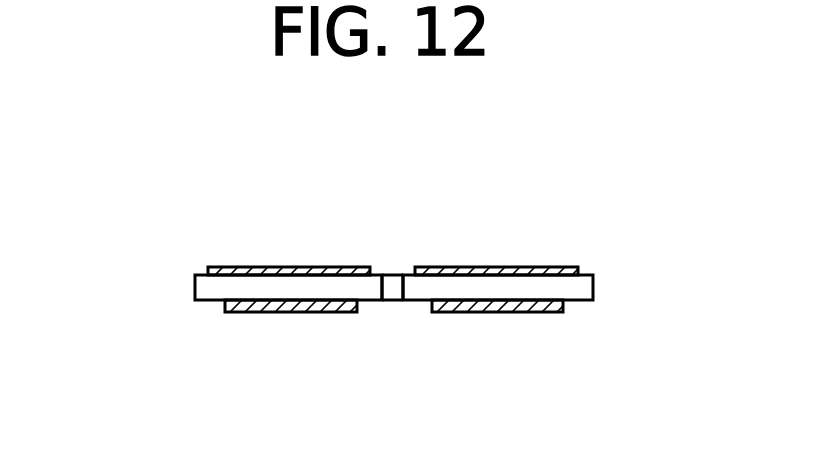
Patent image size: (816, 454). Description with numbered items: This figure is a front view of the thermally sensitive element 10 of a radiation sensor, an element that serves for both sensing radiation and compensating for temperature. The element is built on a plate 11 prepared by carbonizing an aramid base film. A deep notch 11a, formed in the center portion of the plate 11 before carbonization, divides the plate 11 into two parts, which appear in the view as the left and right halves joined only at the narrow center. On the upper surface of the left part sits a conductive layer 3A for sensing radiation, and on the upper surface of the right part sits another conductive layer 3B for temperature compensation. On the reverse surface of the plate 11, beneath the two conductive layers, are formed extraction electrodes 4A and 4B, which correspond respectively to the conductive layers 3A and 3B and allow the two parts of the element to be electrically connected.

The thermally sensitive element 10 is at (174, 292).
The plate 11 is at (594, 283).
The notch 11a is at (393, 300).
The conductive layer 3A is at (270, 266).
The conductive layer 3B is at (487, 266).
The extraction electrodes 4A is at (263, 310).
The extraction electrodes 4B is at (508, 310).